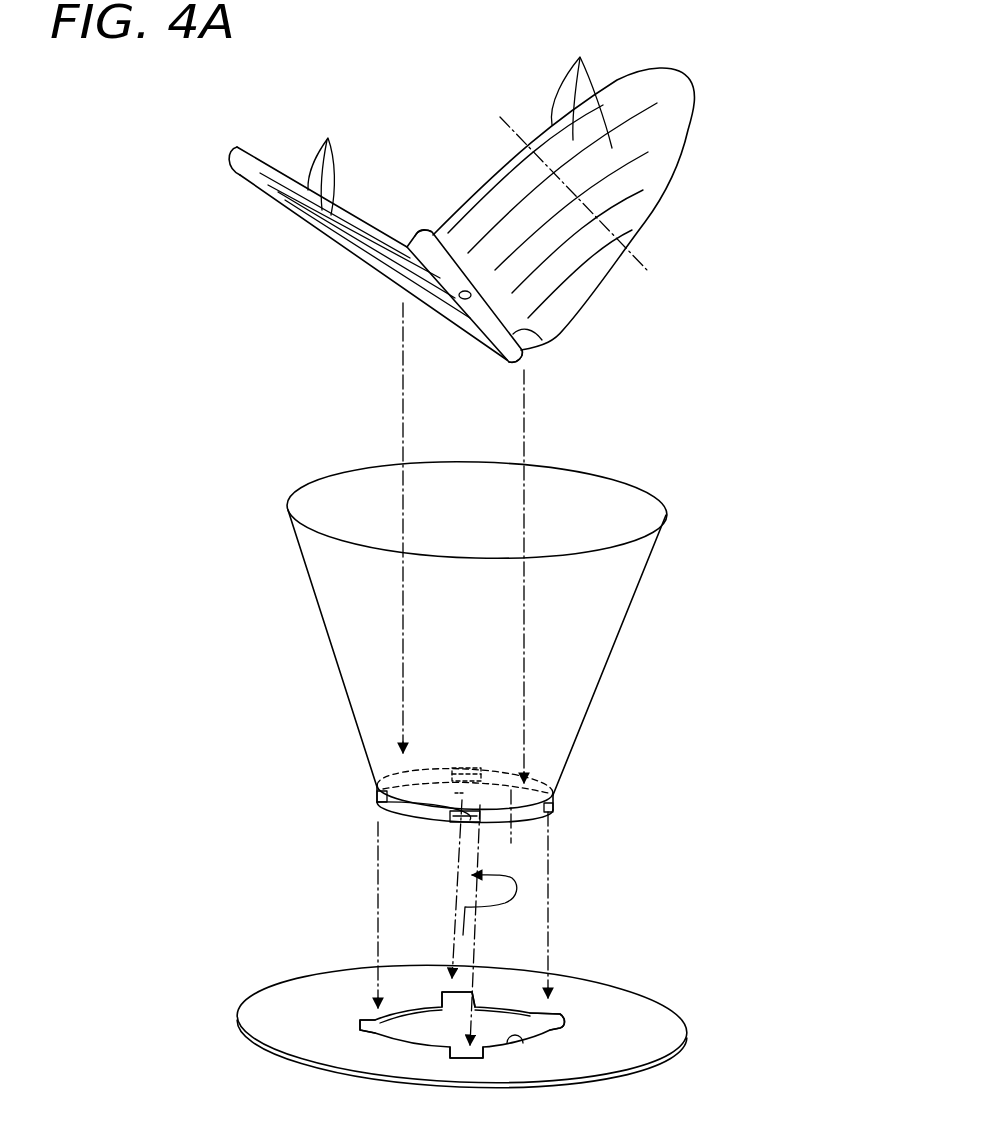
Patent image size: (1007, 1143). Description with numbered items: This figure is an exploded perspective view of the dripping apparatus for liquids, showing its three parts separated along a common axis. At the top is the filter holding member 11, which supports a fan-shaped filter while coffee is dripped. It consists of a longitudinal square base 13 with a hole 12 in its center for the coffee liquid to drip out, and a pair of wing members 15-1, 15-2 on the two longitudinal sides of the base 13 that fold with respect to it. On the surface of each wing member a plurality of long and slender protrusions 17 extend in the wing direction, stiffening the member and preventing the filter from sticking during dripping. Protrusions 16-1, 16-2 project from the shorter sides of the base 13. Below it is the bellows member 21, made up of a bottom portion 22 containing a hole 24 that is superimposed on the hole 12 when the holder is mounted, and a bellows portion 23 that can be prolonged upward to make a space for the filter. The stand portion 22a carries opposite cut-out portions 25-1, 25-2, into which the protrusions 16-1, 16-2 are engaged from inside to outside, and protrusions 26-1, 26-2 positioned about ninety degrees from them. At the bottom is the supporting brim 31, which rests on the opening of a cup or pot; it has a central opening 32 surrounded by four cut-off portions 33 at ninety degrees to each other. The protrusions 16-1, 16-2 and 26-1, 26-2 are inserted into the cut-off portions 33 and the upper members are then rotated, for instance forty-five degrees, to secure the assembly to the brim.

The filter holding member 11 is at (510, 404).
The hole 12 is at (475, 290).
The base 13 is at (516, 336).
The wing member 15-1 is at (245, 157).
The wing member 15-2 is at (683, 102).
The protrusion 16-1 is at (422, 233).
The protrusion 16-2 is at (513, 363).
The protrusions 17 is at (328, 139).
The bellows member 21 is at (490, 741).
The bottom portion 22 is at (407, 778).
The stand portion 22a is at (413, 820).
The bellows portion 23 is at (327, 630).
The hole 24 is at (487, 780).
The cut-out portion 25-1 is at (377, 797).
The cut-out portion 25-2 is at (553, 810).
The protrusion 26-1 is at (458, 767).
The protrusion 26-2 is at (449, 823).
The supporting brim 31 is at (476, 1026).
The opening 32 is at (521, 1043).
The cut-off portions 33 is at (443, 990).